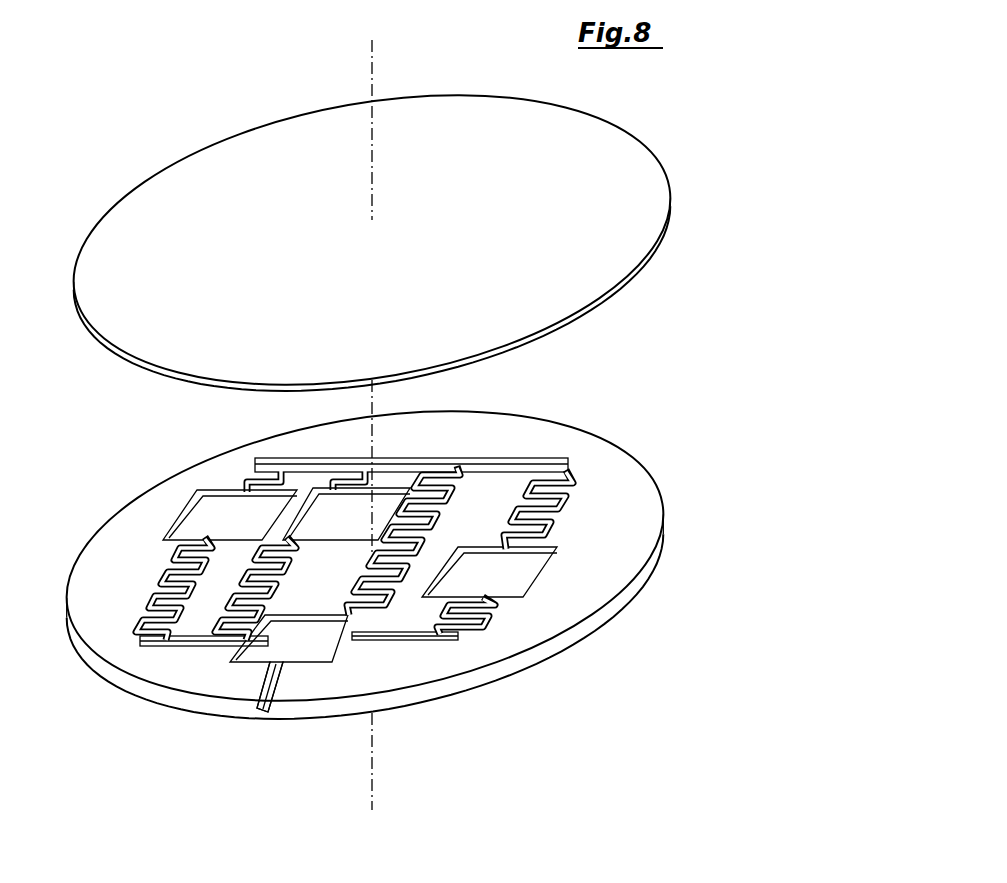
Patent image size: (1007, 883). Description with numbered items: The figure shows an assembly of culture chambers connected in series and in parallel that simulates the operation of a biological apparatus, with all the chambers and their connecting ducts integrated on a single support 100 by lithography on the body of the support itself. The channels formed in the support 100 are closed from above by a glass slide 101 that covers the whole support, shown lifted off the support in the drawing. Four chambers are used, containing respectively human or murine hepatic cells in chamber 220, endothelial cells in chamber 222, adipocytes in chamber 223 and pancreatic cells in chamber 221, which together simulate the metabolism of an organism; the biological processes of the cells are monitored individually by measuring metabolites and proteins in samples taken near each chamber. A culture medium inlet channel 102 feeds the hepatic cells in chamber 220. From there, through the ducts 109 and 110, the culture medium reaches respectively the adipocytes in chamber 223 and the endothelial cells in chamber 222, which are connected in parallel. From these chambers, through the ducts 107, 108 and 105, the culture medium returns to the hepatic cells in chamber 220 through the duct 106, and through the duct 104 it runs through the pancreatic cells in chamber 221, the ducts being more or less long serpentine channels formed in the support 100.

The support 100 is at (132, 548).
The glass slide 101 is at (220, 200).
The culture medium inlet channel 102 is at (268, 695).
The duct 104 is at (560, 500).
The duct 105 is at (520, 462).
The duct 106 is at (460, 478).
The duct 107 is at (330, 473).
The duct 108 is at (258, 470).
The duct 109 is at (160, 588).
The duct 110 is at (230, 600).
The hepatic cells chamber 220 is at (313, 643).
The pancreatic cells chamber 221 is at (508, 575).
The endothelial cells chamber 222 is at (360, 515).
The adipocytes chamber 223 is at (228, 517).